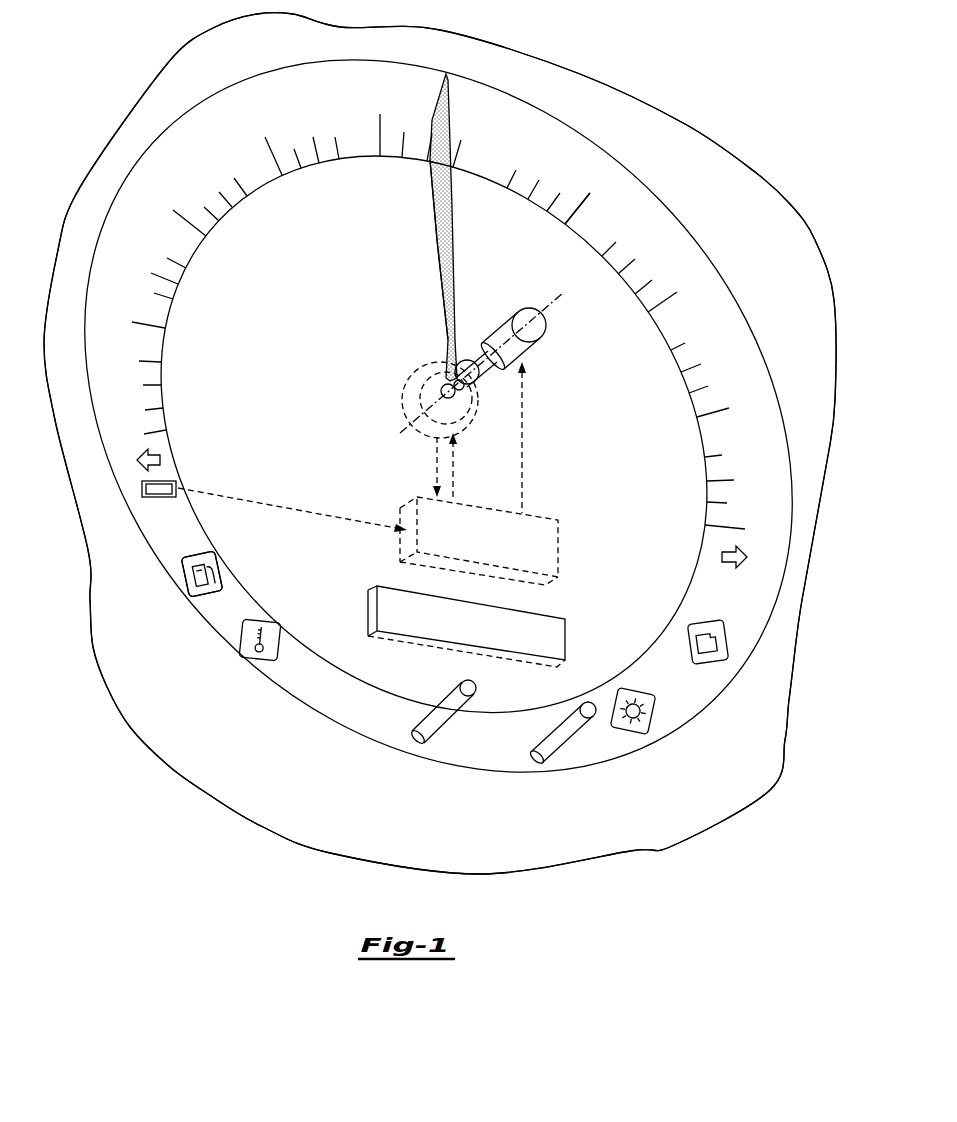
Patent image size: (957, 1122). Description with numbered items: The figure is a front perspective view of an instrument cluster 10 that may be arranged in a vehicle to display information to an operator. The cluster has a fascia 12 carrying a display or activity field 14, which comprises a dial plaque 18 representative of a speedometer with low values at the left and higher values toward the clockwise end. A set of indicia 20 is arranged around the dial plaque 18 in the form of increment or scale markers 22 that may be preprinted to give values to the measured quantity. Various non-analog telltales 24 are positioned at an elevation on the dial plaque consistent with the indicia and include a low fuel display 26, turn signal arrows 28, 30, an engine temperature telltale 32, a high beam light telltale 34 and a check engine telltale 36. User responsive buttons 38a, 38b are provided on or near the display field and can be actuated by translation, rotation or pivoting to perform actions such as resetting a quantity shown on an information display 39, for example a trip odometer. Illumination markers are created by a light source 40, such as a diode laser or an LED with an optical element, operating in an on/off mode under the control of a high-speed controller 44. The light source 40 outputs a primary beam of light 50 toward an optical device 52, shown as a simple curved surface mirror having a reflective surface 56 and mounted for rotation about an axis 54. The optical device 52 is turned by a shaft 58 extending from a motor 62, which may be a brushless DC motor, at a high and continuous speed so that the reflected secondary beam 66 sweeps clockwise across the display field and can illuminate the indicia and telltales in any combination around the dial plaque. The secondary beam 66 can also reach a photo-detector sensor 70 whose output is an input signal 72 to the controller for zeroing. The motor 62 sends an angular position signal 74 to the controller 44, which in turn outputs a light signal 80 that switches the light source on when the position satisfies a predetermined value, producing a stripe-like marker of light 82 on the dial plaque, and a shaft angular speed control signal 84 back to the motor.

The instrument cluster 10 is at (668, 100).
The fascia 12 is at (697, 215).
The display field 14 is at (505, 55).
The dial plaque 18 is at (693, 297).
The indicia 20 is at (475, 148).
The scale markers 22 is at (587, 203).
The telltales 24 is at (197, 625).
The low fuel display 26 is at (220, 572).
The turn signal arrow 28 is at (163, 458).
The turn signal arrow 30 is at (720, 555).
The engine temperature telltale 32 is at (285, 635).
The high beam light telltale 34 is at (616, 702).
The check engine telltale 36 is at (690, 630).
The button 38a is at (572, 730).
The button 38b is at (440, 720).
The information display 39 is at (525, 625).
The light source 40 is at (540, 325).
The controller 44 is at (558, 520).
The primary beam of light 50 is at (480, 340).
The optical device 52 is at (472, 400).
The axis 54 is at (543, 300).
The reflective surface 56 is at (445, 375).
The shaft 58 is at (466, 446).
The motor 62 is at (400, 395).
The secondary beam 66 is at (440, 243).
The photo-detector sensor 70 is at (178, 488).
The input signal 72 is at (331, 510).
The angular position signal 74 is at (437, 472).
The light signal 80 is at (522, 417).
The marker of light 82 is at (437, 98).
The shaft angular speed control signal 84 is at (457, 472).